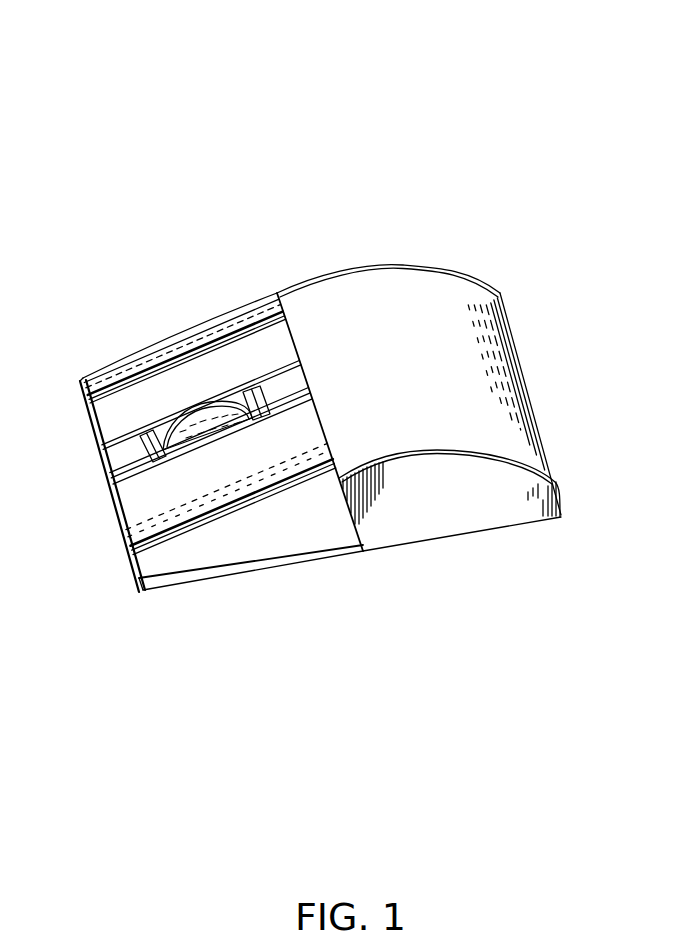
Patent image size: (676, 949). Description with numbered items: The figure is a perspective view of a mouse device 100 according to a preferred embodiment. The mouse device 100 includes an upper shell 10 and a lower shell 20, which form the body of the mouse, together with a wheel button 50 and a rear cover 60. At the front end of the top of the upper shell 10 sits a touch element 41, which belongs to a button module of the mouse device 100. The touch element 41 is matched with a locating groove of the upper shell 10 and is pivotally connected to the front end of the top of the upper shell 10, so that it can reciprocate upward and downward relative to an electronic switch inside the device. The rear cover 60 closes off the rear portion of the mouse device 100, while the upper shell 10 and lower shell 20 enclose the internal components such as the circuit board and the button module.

The mouse device 100 is at (76, 42).
The upper shell 10 is at (160, 342).
The lower shell 20 is at (263, 560).
The touch element 41 is at (225, 345).
The wheel button 50 is at (107, 467).
The rear cover 60 is at (507, 373).